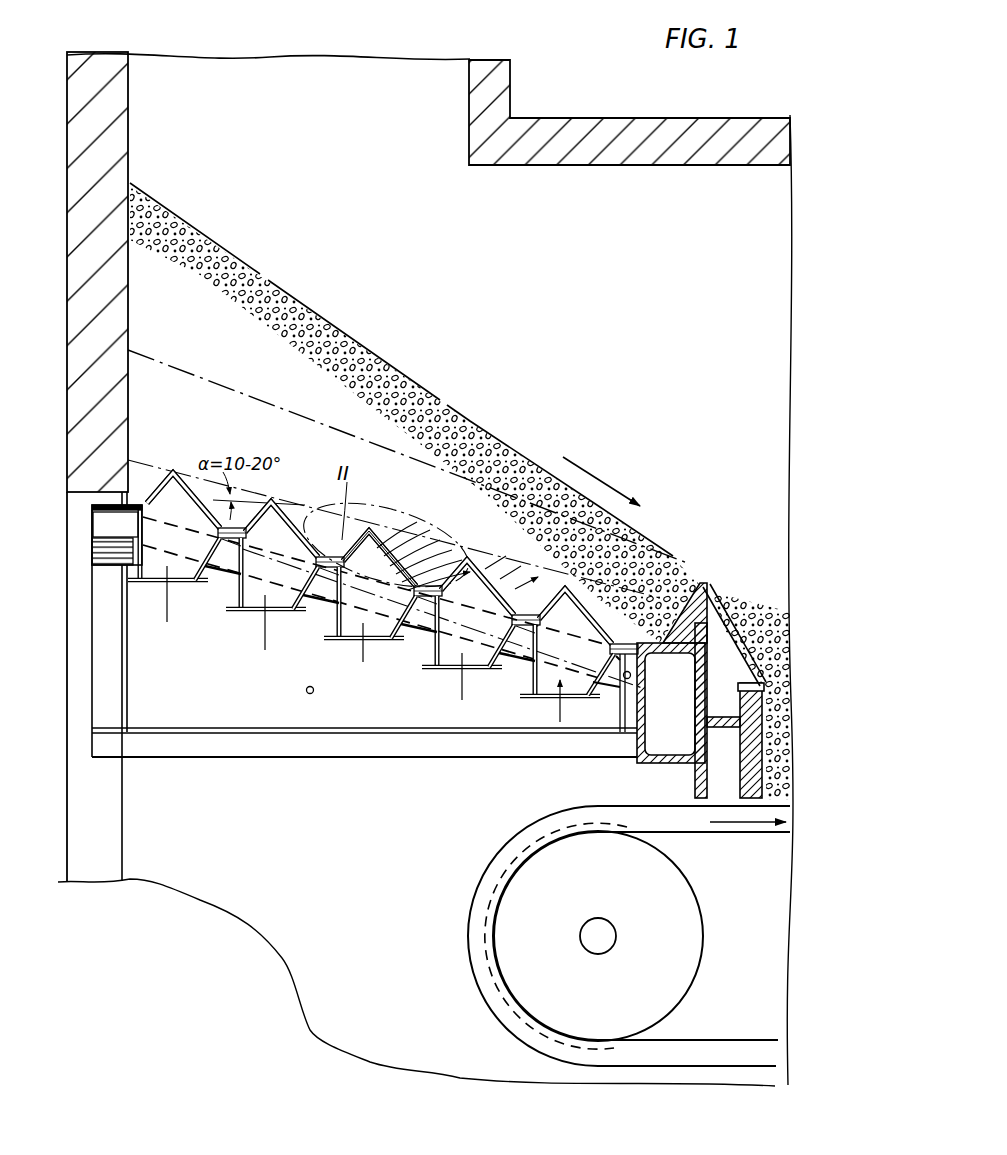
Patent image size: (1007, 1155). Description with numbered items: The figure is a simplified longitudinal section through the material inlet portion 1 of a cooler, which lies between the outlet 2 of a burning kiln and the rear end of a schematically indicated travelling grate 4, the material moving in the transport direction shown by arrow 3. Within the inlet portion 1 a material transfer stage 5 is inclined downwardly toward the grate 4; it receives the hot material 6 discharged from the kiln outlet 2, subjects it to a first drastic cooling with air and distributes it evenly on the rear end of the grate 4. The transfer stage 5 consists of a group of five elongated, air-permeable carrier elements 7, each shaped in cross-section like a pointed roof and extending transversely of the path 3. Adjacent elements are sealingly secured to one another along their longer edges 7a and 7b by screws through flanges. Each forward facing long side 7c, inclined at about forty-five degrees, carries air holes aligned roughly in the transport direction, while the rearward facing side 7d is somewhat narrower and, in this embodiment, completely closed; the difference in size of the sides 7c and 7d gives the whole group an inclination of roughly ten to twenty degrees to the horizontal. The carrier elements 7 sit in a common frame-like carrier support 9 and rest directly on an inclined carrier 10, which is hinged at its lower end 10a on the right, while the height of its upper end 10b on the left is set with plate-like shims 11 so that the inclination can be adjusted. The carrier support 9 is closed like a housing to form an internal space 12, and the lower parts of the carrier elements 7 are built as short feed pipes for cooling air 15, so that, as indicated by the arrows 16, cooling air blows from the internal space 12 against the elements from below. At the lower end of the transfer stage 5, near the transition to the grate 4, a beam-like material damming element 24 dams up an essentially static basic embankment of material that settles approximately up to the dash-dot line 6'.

The material inlet portion 1 is at (506, 254).
The outlet of a burning kiln 2 is at (343, 74).
The material transport direction 3 is at (593, 478).
The travelling grate 4 is at (530, 822).
The material transfer stage 5 is at (175, 466).
The material 6 is at (460, 491).
The dash-dot line 6' is at (409, 441).
The air-permeable carrier elements 7 is at (162, 486).
The longer edge of carrier element 7a is at (345, 566).
The longer edge of carrier element 7b is at (405, 583).
The forward facing long side 7c is at (380, 522).
The rearward facing side 7d is at (345, 548).
The carrier support 9 is at (265, 748).
The inclined carrier 10 is at (222, 568).
The lower end of carrier 10a is at (616, 678).
The upper end of carrier 10b is at (110, 510).
The plate-like shims 11 is at (108, 562).
The internal space 12 is at (311, 694).
The feed pipes for cooling air 15 is at (340, 618).
The arrows 16 is at (265, 628).
The material damming element 24 is at (697, 587).